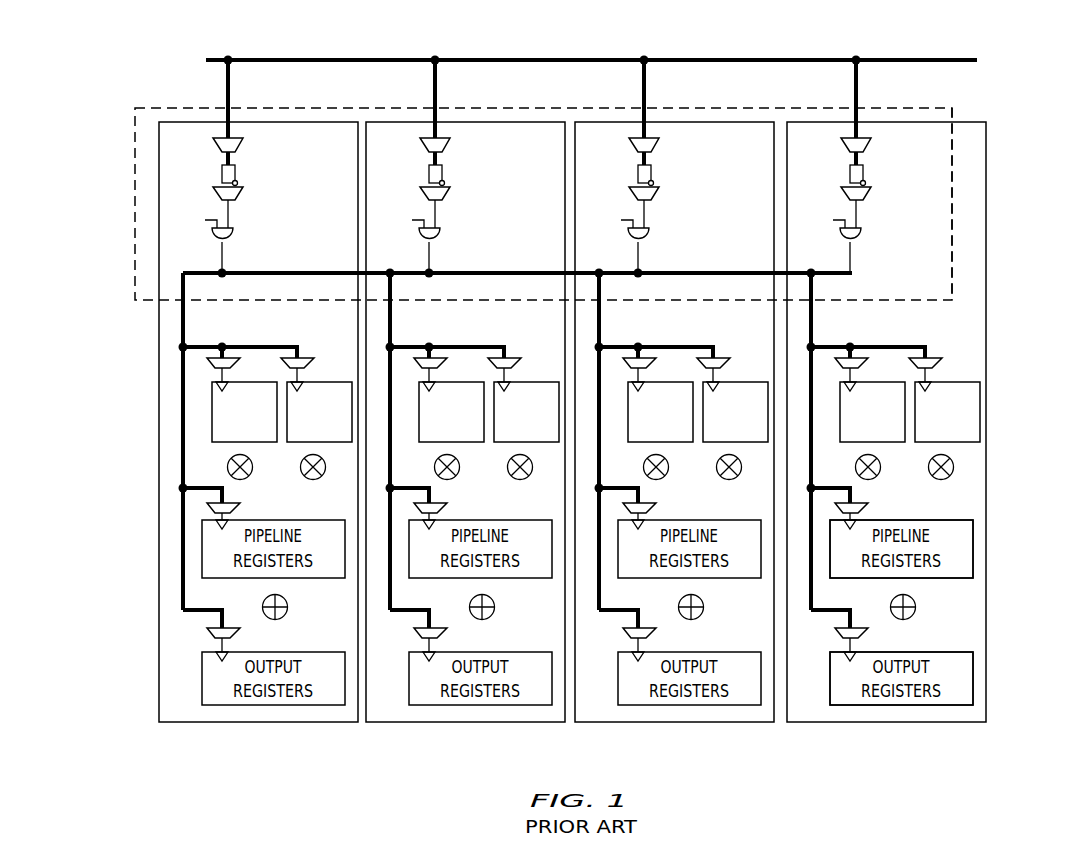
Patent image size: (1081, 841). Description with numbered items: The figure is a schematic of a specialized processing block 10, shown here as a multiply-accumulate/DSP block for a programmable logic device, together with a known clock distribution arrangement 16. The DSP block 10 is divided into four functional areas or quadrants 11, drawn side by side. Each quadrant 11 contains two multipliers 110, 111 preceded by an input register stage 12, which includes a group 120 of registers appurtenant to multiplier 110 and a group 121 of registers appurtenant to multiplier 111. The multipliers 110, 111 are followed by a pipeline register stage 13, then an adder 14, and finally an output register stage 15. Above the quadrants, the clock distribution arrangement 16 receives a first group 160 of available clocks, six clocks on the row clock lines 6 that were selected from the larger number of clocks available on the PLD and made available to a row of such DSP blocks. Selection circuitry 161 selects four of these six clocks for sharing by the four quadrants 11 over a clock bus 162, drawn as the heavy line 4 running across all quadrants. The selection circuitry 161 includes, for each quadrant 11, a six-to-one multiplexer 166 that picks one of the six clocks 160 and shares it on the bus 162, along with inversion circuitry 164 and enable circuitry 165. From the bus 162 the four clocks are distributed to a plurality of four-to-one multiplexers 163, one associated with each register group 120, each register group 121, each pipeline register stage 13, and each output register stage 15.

The clock distribution line 4 is at (742, 278).
The row clock lines ROWCLK[5:0] 6 is at (950, 62).
The specialized processing block 10 is at (604, 439).
The quadrant 11 is at (310, 722).
The input register stage 12 is at (603, 422).
The pipeline register stage 13 is at (988, 514).
The adder 14 is at (285, 616).
The output register stage 15 is at (988, 648).
The clock distribution arrangement 16 is at (1000, 130).
The multiplier 110 is at (252, 470).
The multiplier 111 is at (313, 480).
The group of registers 120 is at (218, 442).
The group of registers 121 is at (326, 442).
The first group of available clocks 160 is at (907, 55).
The selection circuitry 161 is at (950, 241).
The clock bus 162 is at (616, 271).
The 4:1 multiplexer 163 is at (235, 357).
The inversion circuitry 164 is at (212, 196).
The enable circuitry 165 is at (212, 236).
The 6:1 multiplexer 166 is at (212, 143).